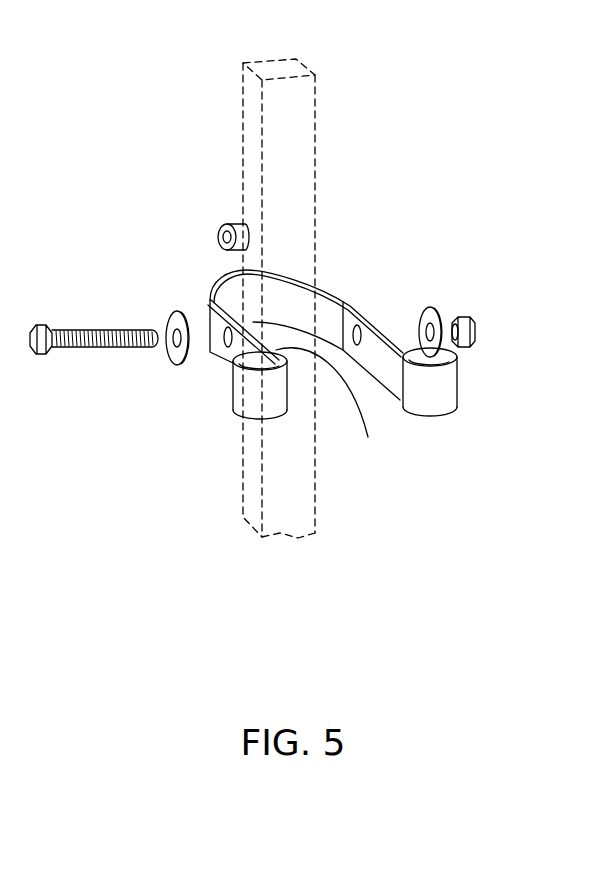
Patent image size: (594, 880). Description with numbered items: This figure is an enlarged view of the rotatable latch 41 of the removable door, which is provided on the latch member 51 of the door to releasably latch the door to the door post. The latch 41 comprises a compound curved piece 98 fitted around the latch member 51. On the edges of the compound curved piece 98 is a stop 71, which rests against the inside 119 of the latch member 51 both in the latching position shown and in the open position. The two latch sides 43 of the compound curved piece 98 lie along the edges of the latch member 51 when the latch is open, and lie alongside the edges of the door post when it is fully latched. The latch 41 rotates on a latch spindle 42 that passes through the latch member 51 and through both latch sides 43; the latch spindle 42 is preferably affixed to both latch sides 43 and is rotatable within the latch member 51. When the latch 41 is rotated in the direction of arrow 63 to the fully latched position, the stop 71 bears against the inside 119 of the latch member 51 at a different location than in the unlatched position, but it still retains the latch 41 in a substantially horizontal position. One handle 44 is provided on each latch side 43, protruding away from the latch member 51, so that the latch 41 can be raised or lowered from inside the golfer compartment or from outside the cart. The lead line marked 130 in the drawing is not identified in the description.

The mounting assembly 130 is at (484, 152).
The rotatable latch 41 is at (502, 282).
The latch spindle 42 is at (85, 347).
The latch sides 43 is at (323, 302).
The handles 44 is at (252, 398).
The latch member 51 is at (274, 287).
The arrow 63 is at (390, 322).
The stop 71 is at (235, 297).
The compound curved piece 98 is at (243, 342).
The inside of latch member 119 is at (272, 52).